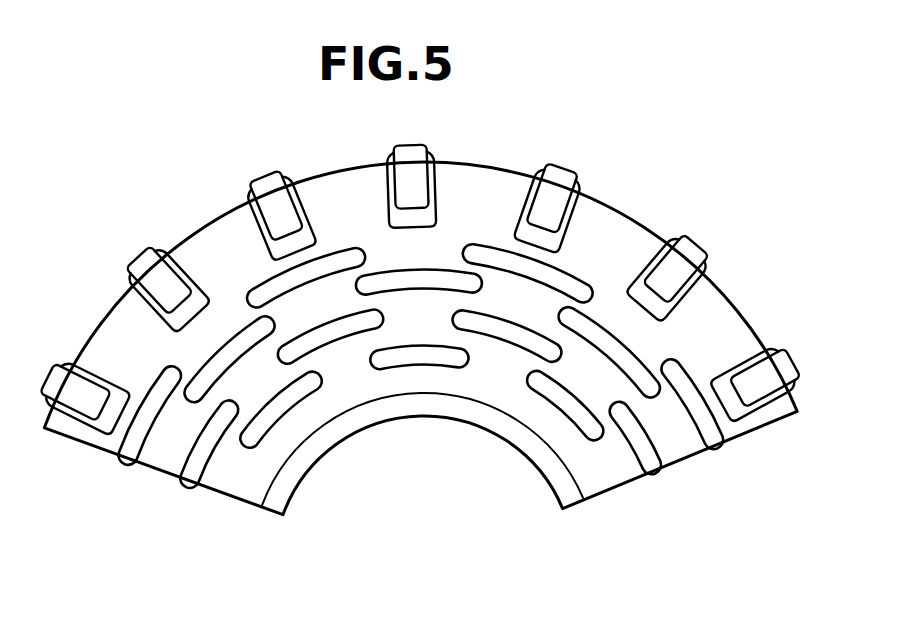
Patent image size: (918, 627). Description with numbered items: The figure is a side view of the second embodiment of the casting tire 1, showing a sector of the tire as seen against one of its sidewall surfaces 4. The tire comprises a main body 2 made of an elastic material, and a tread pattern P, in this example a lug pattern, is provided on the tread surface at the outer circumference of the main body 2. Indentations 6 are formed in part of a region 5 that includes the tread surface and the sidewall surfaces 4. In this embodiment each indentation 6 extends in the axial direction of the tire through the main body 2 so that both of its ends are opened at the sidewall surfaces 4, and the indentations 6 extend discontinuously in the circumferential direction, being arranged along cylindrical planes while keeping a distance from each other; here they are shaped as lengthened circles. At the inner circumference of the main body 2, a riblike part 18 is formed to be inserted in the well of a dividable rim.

The casting tire 1 is at (185, 170).
The main body 2 is at (603, 222).
The tread pattern P is at (708, 247).
The region 5 is at (655, 347).
The sidewall surfaces 4 is at (495, 380).
The riblike part 18 is at (297, 493).
The indentation 6 is at (152, 408).